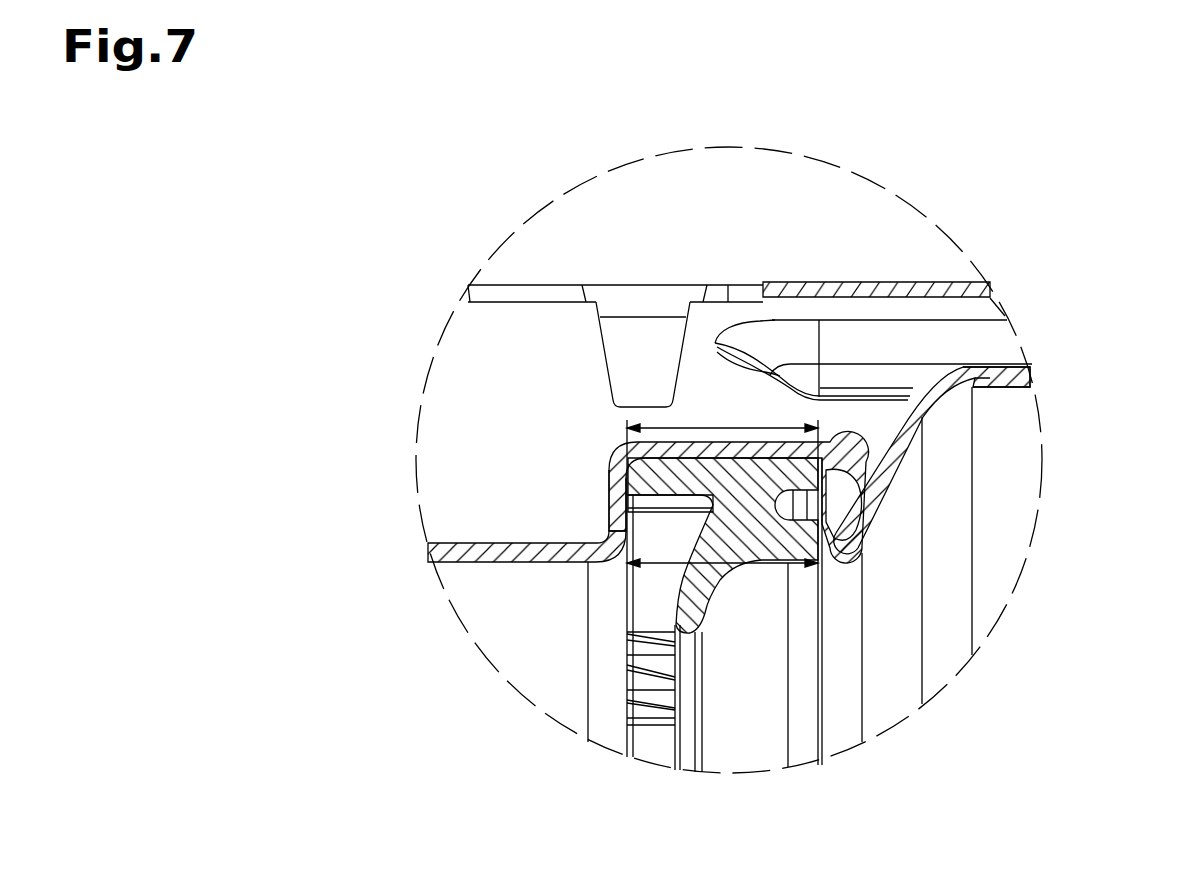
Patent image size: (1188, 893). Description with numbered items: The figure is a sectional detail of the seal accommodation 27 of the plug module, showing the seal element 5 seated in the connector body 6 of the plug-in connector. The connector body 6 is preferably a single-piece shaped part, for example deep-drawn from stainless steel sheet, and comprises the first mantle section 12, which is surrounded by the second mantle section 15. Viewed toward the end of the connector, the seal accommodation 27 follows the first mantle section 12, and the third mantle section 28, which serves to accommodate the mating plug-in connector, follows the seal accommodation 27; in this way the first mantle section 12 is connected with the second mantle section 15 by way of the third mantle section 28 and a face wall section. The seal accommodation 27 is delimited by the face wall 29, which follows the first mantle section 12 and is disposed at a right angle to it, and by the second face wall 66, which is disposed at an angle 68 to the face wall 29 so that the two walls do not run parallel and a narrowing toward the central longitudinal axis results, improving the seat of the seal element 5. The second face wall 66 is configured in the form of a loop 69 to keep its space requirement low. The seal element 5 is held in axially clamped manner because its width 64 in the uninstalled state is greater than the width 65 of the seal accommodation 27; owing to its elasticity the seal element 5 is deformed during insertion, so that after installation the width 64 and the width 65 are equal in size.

The seal element 5 is at (705, 613).
The connector body 6 is at (985, 287).
The first mantle section 12 is at (460, 553).
The second mantle section 15 is at (928, 290).
The seal accommodation 27 is at (609, 443).
The third mantle section 28 is at (993, 385).
The face wall 29 is at (609, 496).
The width of the seal element 64 is at (762, 567).
The width of the seal accommodation 65 is at (719, 430).
The second face wall 66 is at (855, 490).
The angle 68 is at (695, 513).
The loop 69 is at (880, 543).